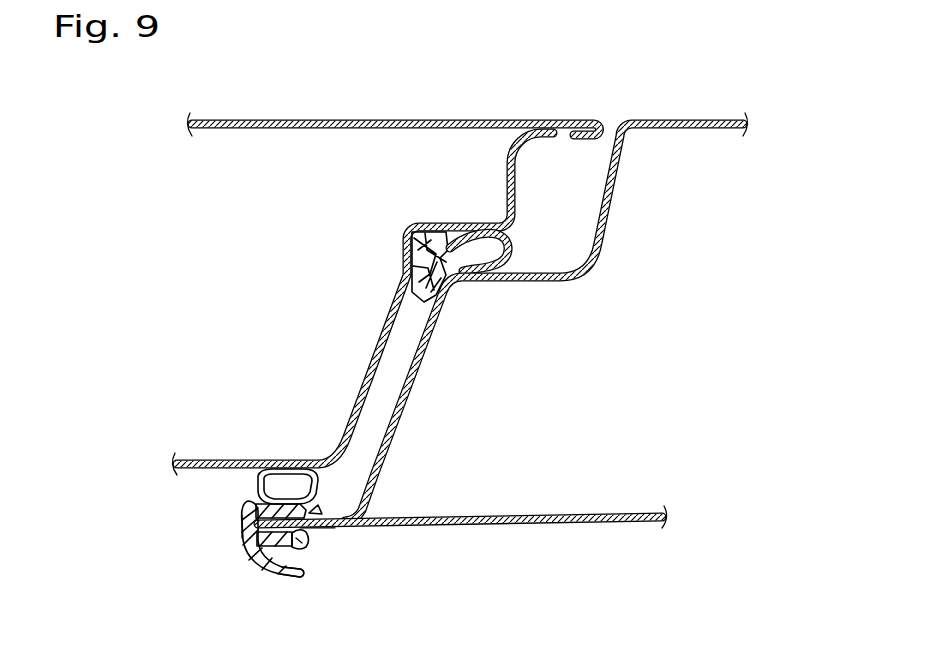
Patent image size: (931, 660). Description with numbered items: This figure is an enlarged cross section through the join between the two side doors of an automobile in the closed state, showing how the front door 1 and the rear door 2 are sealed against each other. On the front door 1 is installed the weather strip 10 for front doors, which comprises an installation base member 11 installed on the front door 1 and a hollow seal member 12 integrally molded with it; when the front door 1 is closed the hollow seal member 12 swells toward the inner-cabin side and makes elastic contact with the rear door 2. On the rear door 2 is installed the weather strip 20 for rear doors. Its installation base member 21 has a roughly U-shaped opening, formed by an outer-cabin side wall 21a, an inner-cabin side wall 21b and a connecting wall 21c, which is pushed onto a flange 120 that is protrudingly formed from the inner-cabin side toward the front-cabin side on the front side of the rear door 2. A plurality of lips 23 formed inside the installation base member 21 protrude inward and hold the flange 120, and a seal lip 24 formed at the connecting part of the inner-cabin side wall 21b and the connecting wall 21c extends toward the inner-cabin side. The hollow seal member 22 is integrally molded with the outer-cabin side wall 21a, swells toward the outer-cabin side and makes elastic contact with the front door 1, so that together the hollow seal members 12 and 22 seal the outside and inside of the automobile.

The front door 1 is at (368, 110).
The rear door 2 is at (567, 527).
The weather strip for front doors 10 is at (513, 228).
The installation base member 11 is at (408, 248).
The hollow seal member 12 is at (510, 240).
The weather strip for rear doors 20 is at (233, 520).
The installation base member 21 is at (248, 548).
The outer-cabin side wall 21a is at (315, 503).
The inner-cabin side wall 21b is at (288, 552).
The connecting wall 21c is at (246, 531).
The hollow seal member 22 is at (252, 485).
The lips 23 is at (299, 549).
The seal lip 24 is at (280, 570).
The flange 120 is at (318, 532).